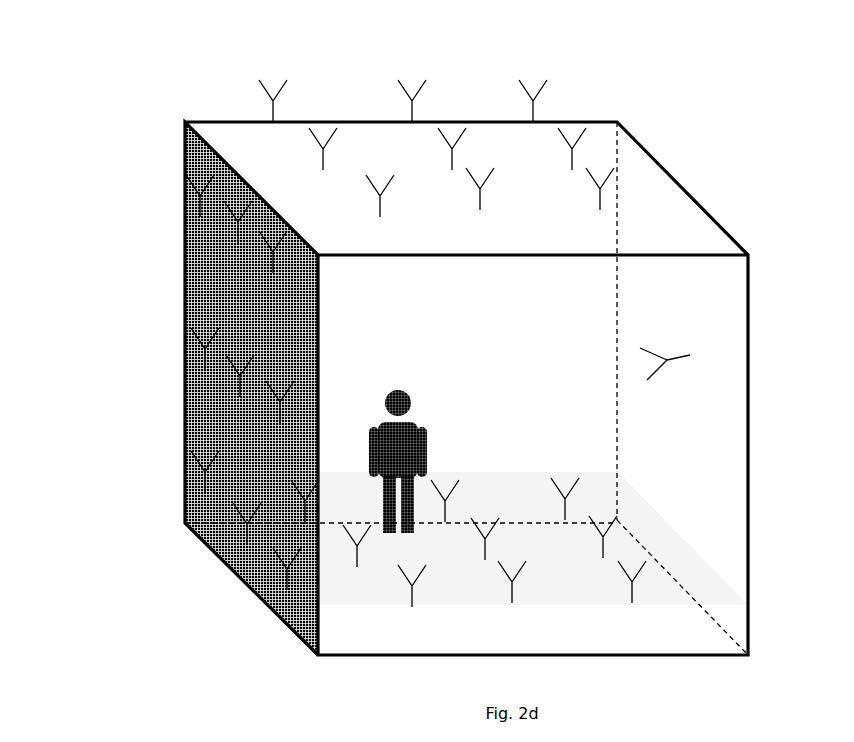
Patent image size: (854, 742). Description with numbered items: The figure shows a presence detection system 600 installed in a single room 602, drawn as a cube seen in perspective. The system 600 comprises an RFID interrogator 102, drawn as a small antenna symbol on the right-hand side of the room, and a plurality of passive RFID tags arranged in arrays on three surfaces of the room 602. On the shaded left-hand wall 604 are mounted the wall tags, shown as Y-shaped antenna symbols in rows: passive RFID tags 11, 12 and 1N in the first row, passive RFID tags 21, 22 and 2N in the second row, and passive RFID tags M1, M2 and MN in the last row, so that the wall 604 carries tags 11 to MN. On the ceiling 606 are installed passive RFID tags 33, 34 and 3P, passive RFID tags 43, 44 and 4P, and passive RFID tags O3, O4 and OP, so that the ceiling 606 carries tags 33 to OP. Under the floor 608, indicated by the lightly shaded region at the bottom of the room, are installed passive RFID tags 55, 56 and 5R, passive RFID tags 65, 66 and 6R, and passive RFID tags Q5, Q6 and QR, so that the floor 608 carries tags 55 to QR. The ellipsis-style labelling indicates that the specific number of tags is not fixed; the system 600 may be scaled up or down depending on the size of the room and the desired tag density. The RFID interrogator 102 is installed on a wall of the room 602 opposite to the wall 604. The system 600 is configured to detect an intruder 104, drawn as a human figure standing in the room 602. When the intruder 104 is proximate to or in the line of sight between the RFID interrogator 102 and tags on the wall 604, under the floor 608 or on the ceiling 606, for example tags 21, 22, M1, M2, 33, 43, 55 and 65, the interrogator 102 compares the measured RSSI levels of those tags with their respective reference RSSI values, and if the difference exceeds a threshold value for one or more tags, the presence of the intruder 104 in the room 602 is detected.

The presence detection system 600 is at (110, 70).
The room 602 is at (533, 455).
The wall 604 is at (190, 278).
The ceiling 606 is at (643, 173).
The floor 608 is at (683, 568).
The RFID interrogator 102 is at (686, 360).
The intruder 104 is at (450, 445).
The passive RFID tag 11 is at (200, 209).
The passive RFID tag 12 is at (238, 236).
The passive RFID tag 1N is at (273, 266).
The passive RFID tag 21 is at (205, 362).
The passive RFID tag 22 is at (240, 389).
The passive RFID tag 2N is at (280, 414).
The passive RFID tag M1 is at (205, 485).
The passive RFID tag M2 is at (247, 536).
The passive RFID tag MN is at (287, 581).
The passive RFID tag 33 is at (273, 119).
The passive RFID tag 34 is at (412, 119).
The passive RFID tag 3P is at (533, 119).
The passive RFID tag 43 is at (323, 163).
The passive RFID tag 44 is at (452, 161).
The passive RFID tag 4P is at (572, 159).
The passive RFID tag O3 is at (380, 207).
The passive RFID tag O4 is at (480, 201).
The passive RFID tag OP is at (600, 201).
The passive RFID tag 55 is at (305, 515).
The passive RFID tag 56 is at (445, 515).
The passive RFID tag 5R is at (565, 514).
The passive RFID tag 65 is at (357, 559).
The passive RFID tag 66 is at (485, 553).
The passive RFID tag 6R is at (603, 550).
The passive RFID tag Q5 is at (412, 600).
The passive RFID tag Q6 is at (512, 594).
The passive RFID tag QR is at (632, 594).